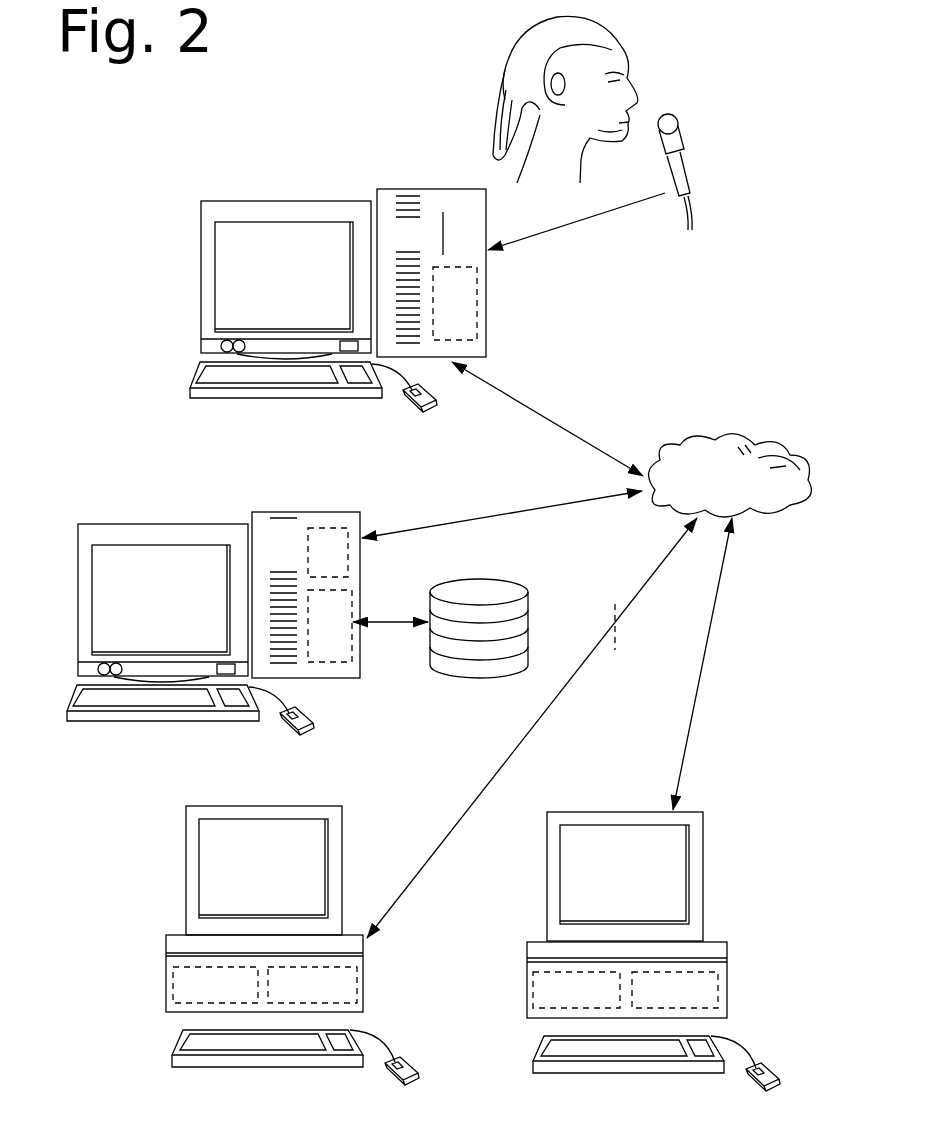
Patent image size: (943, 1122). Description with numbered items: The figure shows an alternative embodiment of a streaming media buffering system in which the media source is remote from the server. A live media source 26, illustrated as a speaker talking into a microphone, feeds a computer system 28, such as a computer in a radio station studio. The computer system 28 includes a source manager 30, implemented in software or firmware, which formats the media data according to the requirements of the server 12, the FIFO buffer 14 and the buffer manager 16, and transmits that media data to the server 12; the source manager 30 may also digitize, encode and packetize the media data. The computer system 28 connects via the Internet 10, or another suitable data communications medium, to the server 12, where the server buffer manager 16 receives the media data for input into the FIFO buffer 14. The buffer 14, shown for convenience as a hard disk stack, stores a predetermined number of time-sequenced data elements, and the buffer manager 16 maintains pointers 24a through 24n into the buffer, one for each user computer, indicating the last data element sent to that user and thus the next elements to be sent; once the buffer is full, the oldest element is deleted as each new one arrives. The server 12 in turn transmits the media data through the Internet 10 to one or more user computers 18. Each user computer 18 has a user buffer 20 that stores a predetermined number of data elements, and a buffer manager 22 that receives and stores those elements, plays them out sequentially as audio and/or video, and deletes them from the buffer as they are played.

The Internet 10 is at (705, 496).
The server 12 is at (262, 512).
The FIFO buffer 14 is at (480, 573).
The buffer manager 16 is at (342, 640).
The user computer 18 is at (363, 987).
The user buffer 20 is at (340, 993).
The buffer manager 22 is at (327, 530).
The pointer 24a is at (531, 592).
The pointer 24n is at (531, 660).
The media source 26 is at (698, 88).
The computer system 28 is at (386, 189).
The source manager 30 is at (467, 318).